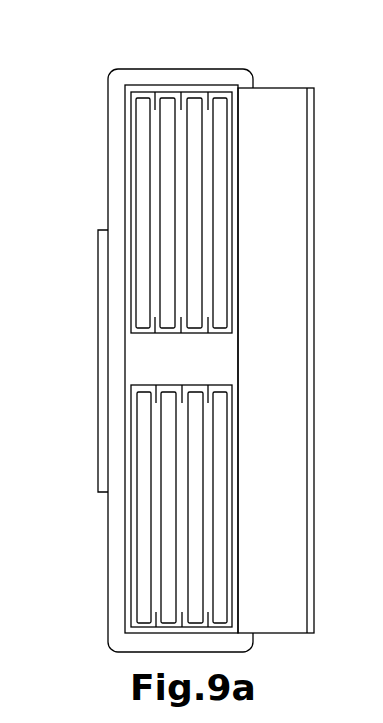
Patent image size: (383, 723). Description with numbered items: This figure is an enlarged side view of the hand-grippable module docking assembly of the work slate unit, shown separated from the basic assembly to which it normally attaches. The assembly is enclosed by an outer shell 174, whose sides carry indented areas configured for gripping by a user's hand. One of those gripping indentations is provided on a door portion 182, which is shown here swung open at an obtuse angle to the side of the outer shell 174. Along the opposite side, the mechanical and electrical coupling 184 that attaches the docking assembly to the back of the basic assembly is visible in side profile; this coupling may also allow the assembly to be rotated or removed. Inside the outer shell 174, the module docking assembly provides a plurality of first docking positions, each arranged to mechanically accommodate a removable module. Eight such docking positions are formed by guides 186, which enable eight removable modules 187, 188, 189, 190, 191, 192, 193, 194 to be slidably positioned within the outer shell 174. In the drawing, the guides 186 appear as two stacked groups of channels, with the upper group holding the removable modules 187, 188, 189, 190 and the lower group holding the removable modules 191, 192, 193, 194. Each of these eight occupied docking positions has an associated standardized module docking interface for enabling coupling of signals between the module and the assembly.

The outer shell 174 is at (203, 69).
The door portion 182 is at (315, 178).
The mechanical and electrical coupling 184 is at (97, 255).
The guides 186 is at (131, 103).
The removable module 187 is at (143, 150).
The removable module 188 is at (172, 175).
The removable module 189 is at (192, 148).
The removable module 190 is at (217, 182).
The removable module 191 is at (143, 520).
The removable module 192 is at (160, 543).
The removable module 193 is at (195, 472).
The removable module 194 is at (220, 548).